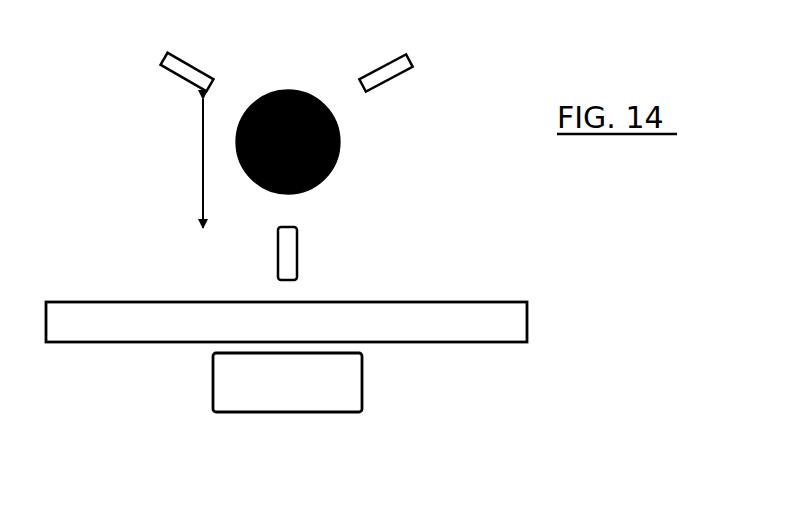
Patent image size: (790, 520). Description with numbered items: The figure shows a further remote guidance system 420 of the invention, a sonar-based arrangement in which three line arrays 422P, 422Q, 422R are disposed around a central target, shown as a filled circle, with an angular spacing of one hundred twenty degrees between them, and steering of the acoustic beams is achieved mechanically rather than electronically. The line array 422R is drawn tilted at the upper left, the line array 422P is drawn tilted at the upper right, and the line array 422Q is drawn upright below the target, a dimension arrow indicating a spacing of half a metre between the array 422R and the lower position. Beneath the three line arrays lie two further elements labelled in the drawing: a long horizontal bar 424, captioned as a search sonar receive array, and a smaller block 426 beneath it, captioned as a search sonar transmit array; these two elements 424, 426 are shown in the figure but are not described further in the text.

The remote guidance system 420 is at (572, 222).
The line array 422R is at (163, 62).
The line array 422P is at (406, 55).
The line array 422Q is at (297, 265).
The search sonar RX array 424 is at (507, 330).
The search sonar Tx array 426 is at (343, 395).